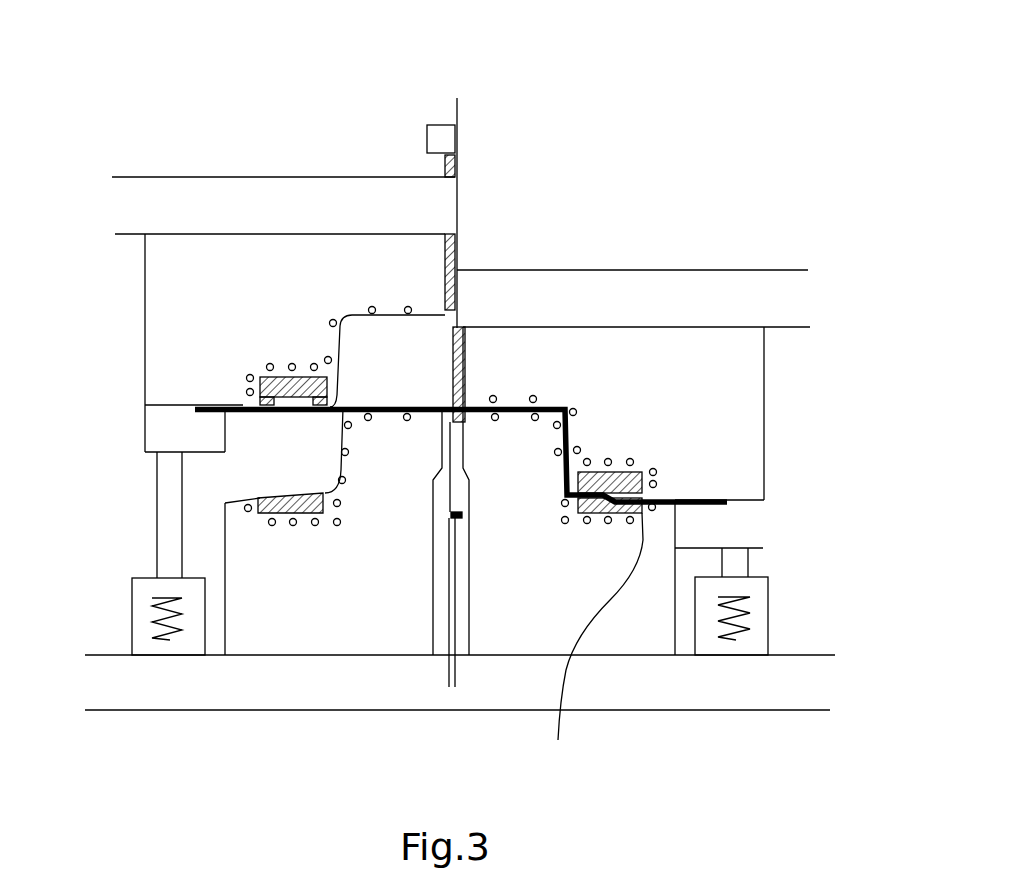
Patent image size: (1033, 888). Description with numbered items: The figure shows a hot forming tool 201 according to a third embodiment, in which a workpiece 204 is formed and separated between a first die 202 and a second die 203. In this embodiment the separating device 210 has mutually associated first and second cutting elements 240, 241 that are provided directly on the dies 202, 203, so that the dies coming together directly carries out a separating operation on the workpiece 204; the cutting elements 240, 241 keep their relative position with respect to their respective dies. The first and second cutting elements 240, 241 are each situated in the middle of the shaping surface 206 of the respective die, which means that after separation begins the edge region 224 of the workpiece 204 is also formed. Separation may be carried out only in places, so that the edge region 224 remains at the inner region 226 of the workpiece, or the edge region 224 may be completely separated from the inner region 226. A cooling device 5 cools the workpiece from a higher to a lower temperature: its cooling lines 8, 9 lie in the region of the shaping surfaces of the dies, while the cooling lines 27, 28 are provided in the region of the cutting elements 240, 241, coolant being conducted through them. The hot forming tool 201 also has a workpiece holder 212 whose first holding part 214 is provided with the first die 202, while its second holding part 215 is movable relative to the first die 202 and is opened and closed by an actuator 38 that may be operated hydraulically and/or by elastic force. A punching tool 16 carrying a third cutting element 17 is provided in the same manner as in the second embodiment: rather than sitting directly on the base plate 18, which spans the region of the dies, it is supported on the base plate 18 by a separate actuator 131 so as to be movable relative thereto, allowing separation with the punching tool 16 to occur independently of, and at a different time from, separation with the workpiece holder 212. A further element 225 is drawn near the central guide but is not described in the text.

The hot forming tool 201 is at (183, 67).
The actuator 131 is at (438, 128).
The punching tool 16 is at (436, 169).
The third cutting element 17 is at (445, 253).
The base plate 18 is at (146, 189).
The first die 202 is at (162, 272).
The cooling device 5 is at (282, 329).
The cooling lines 27 is at (266, 353).
The first cutting element 240 is at (257, 374).
The first holding part 214 is at (181, 392).
The separating device 210 is at (100, 425).
The workpiece holder 212 is at (126, 440).
The second holding part 215 is at (152, 445).
The shaping surface 206 is at (400, 332).
The workpiece 204 is at (408, 400).
The inner region 226 is at (506, 394).
The cooling lines 8 is at (328, 316).
The cooling lines 9 is at (374, 428).
The cooling lines 28 is at (352, 510).
The edge region 224 is at (742, 486).
The stop 225 is at (462, 520).
The second cutting element 241 is at (246, 510).
The actuator 38 is at (105, 615).
The second die 203 is at (342, 600).